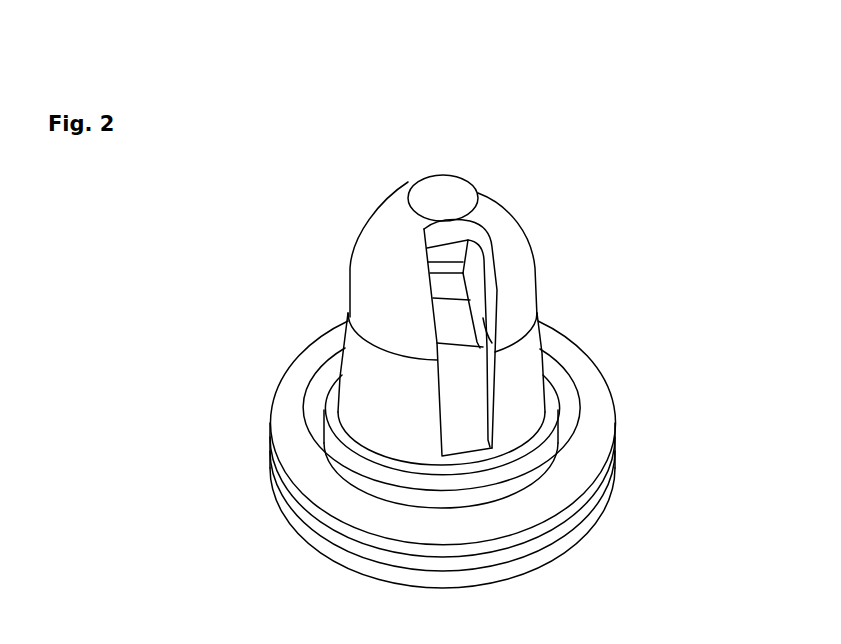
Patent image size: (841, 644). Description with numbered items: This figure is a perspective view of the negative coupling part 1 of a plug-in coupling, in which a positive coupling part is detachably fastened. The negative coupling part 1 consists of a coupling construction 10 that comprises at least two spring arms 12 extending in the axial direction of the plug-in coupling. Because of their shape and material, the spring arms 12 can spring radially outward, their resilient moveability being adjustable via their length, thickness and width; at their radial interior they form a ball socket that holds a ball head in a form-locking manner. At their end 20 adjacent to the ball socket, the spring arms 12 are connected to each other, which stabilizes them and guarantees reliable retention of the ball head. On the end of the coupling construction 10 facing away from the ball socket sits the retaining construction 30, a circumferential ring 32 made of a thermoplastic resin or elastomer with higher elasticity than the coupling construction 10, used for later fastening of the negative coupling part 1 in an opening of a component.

The negative coupling part 1 is at (428, 110).
The coupling construction 10 is at (563, 225).
The spring arm 12 is at (485, 217).
The end 20 is at (432, 190).
The retaining construction 30 is at (637, 408).
The ring 32 is at (302, 472).